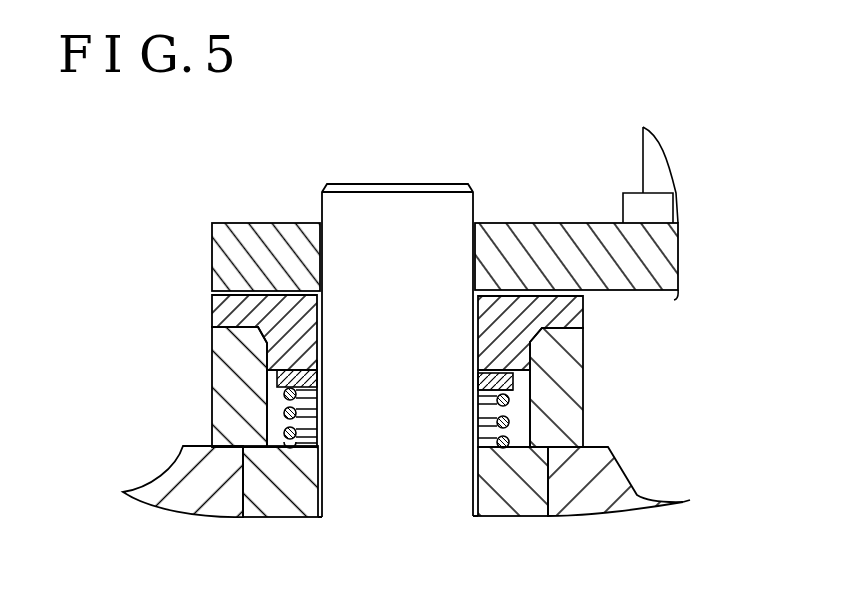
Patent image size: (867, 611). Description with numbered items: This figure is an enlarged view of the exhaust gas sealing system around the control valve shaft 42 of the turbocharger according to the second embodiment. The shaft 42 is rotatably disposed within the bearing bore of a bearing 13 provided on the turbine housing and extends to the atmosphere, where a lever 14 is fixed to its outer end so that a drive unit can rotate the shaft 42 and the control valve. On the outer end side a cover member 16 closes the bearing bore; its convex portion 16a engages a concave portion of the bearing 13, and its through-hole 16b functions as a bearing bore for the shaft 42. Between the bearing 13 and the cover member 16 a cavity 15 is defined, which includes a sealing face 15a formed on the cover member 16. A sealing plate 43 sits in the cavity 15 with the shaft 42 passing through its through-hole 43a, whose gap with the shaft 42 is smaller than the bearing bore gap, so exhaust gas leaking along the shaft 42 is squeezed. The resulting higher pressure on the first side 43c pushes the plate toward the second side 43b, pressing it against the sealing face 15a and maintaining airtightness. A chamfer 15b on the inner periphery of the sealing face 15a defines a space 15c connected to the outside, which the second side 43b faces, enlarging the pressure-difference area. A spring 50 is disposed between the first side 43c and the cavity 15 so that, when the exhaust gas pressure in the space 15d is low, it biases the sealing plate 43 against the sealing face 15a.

The bearing 13 is at (272, 500).
The lever 14 is at (277, 243).
The cavity 15 is at (254, 355).
The sealing face 15a is at (289, 376).
The chamfer 15b is at (323, 370).
The space 15c is at (487, 367).
The space 15d is at (272, 435).
The cover member 16 is at (551, 291).
The convex portion 16a is at (487, 333).
The through-hole 16b is at (322, 328).
The shaft 42 is at (445, 480).
The sealing plate 43 is at (587, 422).
The through-hole 43a is at (535, 463).
The second side 43b is at (535, 352).
The first side 43c is at (533, 406).
The spring 50 is at (532, 420).